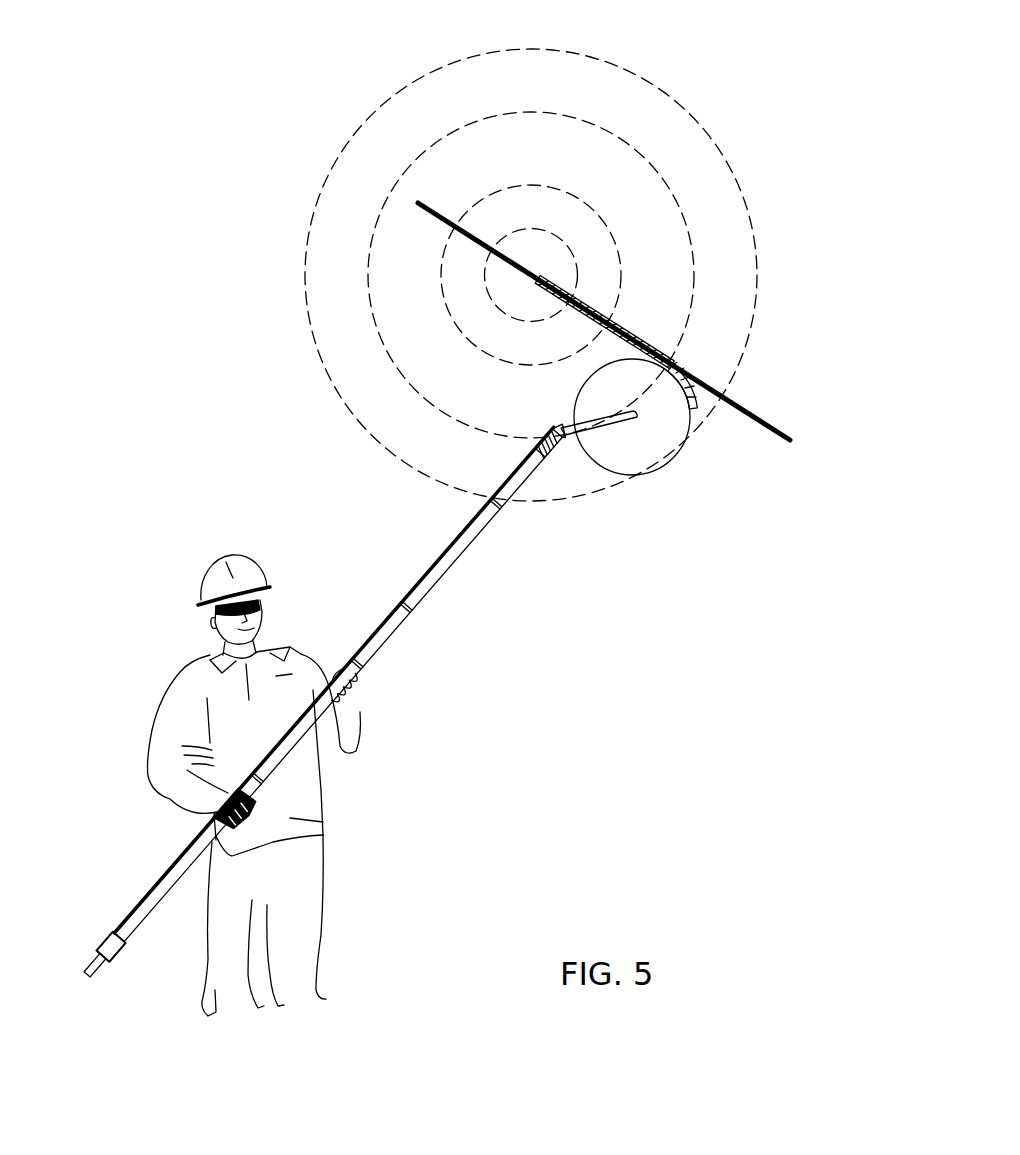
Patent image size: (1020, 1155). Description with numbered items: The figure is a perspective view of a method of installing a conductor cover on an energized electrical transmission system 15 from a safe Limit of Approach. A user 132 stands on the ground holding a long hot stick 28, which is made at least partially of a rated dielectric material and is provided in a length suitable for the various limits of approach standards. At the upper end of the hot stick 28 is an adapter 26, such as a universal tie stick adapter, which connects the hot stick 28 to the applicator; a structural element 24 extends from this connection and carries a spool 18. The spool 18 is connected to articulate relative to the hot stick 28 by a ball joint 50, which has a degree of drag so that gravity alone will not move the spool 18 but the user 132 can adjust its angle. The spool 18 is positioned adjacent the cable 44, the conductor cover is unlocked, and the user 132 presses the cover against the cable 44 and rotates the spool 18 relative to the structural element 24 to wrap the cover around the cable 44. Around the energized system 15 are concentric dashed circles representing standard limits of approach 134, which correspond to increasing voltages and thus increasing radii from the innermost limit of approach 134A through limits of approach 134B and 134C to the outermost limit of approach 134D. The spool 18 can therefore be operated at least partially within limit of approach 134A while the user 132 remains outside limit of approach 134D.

The energized electrical transmission system 15 is at (647, 247).
The spool 18 is at (672, 447).
The structural element 24 is at (622, 428).
The adapter 26 is at (550, 443).
The hot stick 28 is at (464, 545).
The cable 44 is at (748, 417).
The ball joint 50 is at (562, 426).
The user 132 is at (180, 672).
The limits of approach 134 is at (740, 171).
The limit of approach 134A is at (511, 233).
The limit of approach 134B is at (541, 185).
The limit of approach 134C is at (583, 122).
The limit of approach 134D is at (753, 231).